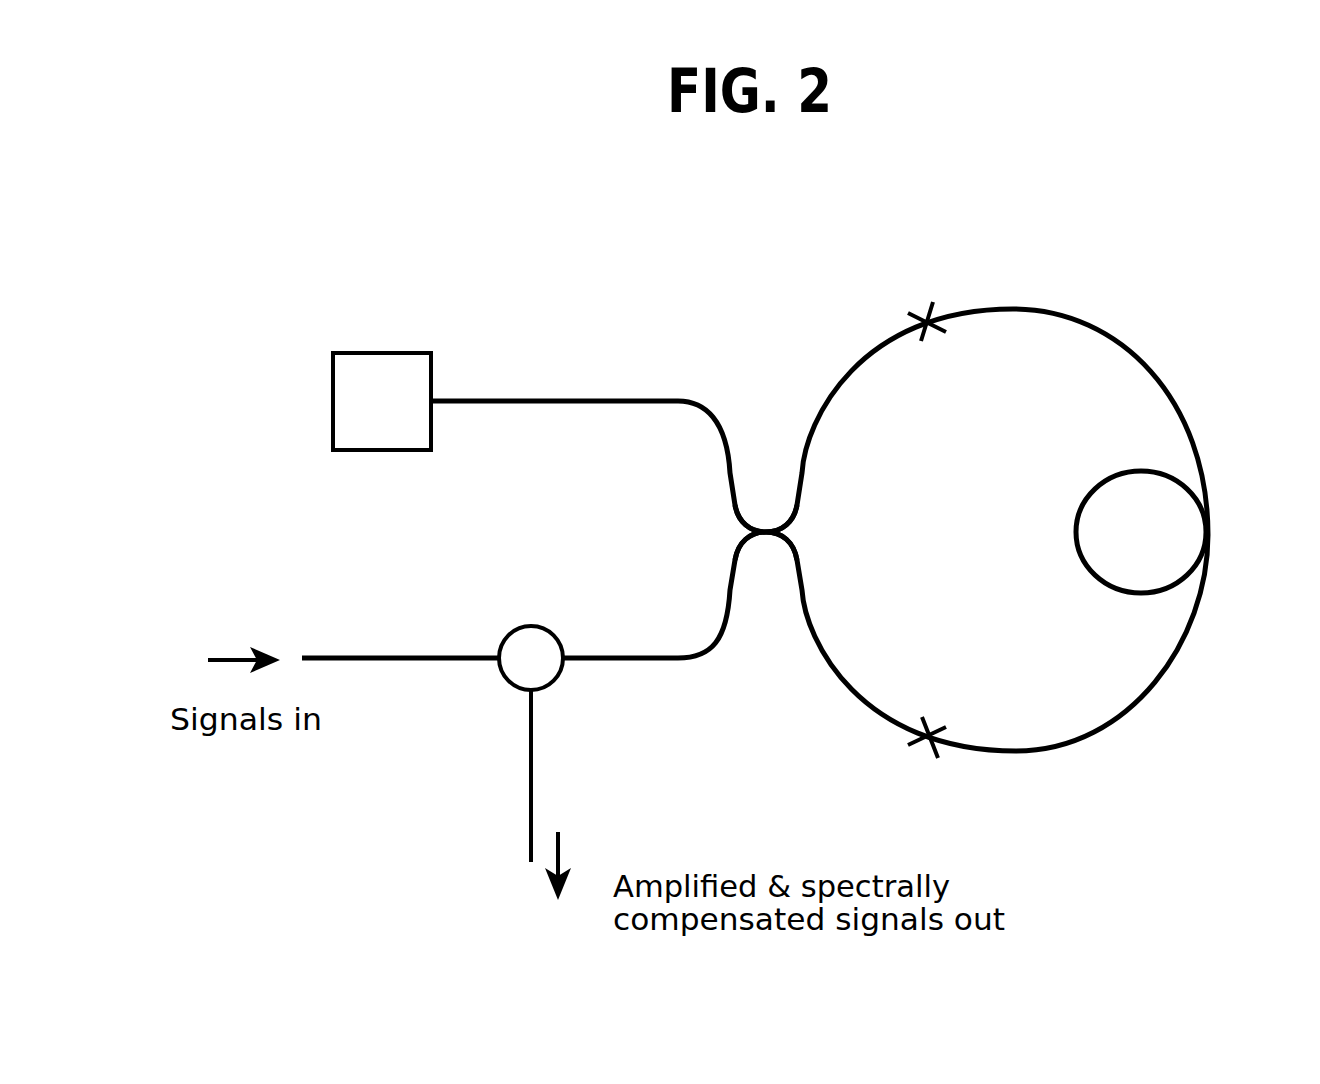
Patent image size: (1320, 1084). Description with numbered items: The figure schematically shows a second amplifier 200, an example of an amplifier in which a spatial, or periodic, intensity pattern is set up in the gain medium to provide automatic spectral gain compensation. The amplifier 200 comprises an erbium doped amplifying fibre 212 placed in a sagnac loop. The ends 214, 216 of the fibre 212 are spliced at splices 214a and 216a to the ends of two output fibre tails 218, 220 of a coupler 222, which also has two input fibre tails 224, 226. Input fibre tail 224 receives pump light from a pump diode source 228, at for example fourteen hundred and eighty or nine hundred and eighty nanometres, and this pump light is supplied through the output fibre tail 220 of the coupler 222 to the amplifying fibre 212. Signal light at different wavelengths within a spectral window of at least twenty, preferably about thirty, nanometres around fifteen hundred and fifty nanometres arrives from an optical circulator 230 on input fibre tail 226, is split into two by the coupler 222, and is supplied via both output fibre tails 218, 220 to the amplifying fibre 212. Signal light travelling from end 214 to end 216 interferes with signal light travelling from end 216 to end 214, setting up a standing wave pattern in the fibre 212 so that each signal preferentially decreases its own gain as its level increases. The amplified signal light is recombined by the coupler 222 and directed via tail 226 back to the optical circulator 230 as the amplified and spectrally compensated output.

The amplifier 200 is at (910, 242).
The erbium doped amplifying fibre 212 is at (1200, 422).
The end of the fibre 214 is at (936, 310).
The splice 214a is at (936, 333).
The end of the fibre 216 is at (936, 752).
The splice 216a is at (936, 722).
The output fibre tail 218 is at (843, 383).
The output fibre tail 220 is at (843, 678).
The coupler 222 is at (756, 478).
The input fibre tail 224 is at (720, 440).
The input fibre tail 226 is at (718, 638).
The pump diode source 228 is at (333, 400).
The optical circulator 230 is at (508, 683).